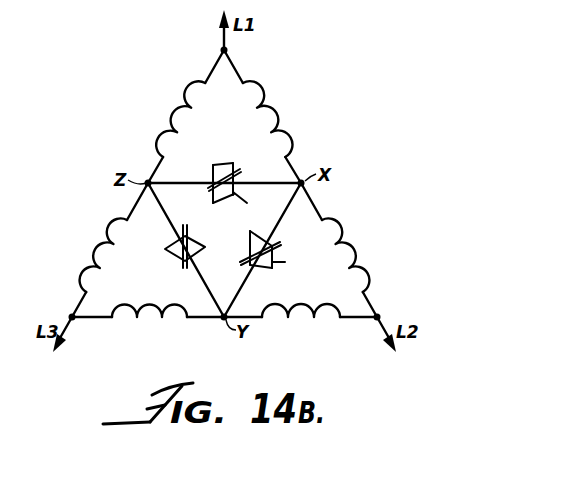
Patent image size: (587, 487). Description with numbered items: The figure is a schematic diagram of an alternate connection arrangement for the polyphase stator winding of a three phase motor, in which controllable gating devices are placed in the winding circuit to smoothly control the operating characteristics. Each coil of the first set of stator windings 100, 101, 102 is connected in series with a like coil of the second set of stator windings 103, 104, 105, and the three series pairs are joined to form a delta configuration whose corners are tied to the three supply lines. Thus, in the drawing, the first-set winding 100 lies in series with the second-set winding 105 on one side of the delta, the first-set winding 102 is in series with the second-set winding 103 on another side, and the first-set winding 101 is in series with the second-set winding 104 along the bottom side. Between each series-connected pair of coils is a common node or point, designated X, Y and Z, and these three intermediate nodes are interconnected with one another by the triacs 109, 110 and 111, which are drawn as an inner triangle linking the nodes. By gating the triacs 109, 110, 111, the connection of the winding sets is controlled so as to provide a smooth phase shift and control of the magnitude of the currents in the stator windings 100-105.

The stator winding 100 is at (281, 118).
The stator winding 101 is at (313, 318).
The stator winding 102 is at (124, 219).
The stator winding 103 is at (340, 228).
The stator winding 104 is at (160, 318).
The stator winding 105 is at (183, 91).
The triac 109 is at (170, 253).
The triac 110 is at (221, 163).
The triac 111 is at (283, 253).